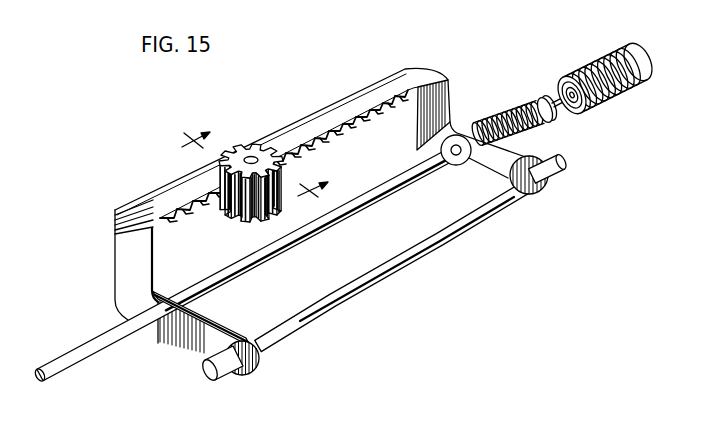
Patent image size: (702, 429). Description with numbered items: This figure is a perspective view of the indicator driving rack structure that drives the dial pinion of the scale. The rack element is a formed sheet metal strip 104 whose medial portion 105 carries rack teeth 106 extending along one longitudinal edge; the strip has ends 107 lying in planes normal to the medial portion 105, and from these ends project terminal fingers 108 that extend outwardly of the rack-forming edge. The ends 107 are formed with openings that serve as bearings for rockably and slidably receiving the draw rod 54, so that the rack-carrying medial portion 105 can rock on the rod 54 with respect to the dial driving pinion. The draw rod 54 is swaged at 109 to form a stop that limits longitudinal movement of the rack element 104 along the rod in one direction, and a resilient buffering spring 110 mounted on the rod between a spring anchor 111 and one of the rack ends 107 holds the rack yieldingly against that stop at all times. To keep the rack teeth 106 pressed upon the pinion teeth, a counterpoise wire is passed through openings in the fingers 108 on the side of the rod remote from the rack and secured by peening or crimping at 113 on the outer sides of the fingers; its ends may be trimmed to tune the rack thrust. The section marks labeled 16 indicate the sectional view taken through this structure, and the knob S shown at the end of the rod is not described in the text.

The formed sheet metal strip 104 is at (304, 187).
The medial portion 105 is at (333, 102).
The rack teeth 106 is at (367, 120).
The ends 107 is at (440, 102).
The terminal fingers 108 is at (553, 185).
The swaging 109 is at (158, 300).
The resilient buffering spring 110 is at (505, 121).
The spring anchor 111 is at (541, 96).
The peening or crimping 113 is at (239, 369).
The section line for FIG. 16 is at (267, 155).
The draw rod 54 is at (95, 342).
The knob S is at (624, 95).